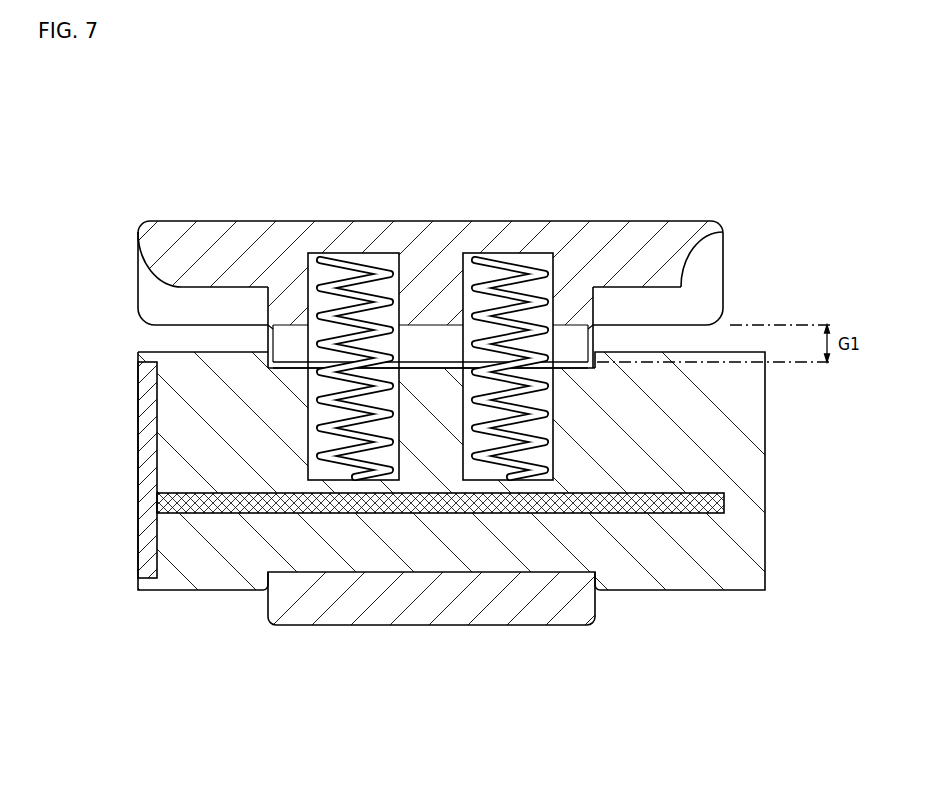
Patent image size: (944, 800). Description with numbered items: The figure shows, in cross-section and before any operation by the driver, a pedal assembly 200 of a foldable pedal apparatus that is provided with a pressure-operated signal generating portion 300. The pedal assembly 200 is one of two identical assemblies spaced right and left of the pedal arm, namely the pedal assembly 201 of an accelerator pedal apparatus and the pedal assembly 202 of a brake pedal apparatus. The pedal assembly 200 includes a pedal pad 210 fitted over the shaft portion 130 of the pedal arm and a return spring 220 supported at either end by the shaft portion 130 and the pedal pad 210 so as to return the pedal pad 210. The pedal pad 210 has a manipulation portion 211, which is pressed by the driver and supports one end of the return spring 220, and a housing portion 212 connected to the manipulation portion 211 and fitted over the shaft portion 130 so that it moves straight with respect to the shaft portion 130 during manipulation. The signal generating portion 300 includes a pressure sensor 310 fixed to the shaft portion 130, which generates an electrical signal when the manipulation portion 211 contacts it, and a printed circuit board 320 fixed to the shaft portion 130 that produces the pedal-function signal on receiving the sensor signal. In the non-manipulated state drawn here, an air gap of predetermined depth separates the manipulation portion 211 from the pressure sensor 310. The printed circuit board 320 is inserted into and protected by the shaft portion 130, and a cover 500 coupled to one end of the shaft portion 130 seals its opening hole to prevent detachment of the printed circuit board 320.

The shaft portion 130 is at (215, 562).
The pedal assembly 200 is at (440, 423).
The pedal assembly of accelerator pedal apparatus 201 is at (440, 217).
The pedal assembly of brake pedal apparatus 202 is at (430, 327).
The pedal pad 210 is at (562, 215).
The manipulation portion 211 is at (617, 243).
The housing portion 212 is at (505, 605).
The return spring 220 is at (493, 262).
The signal generating portion 300 is at (438, 557).
The pressure sensor 310 is at (425, 368).
The printed circuit board 320 is at (697, 513).
The cover 500 is at (147, 472).